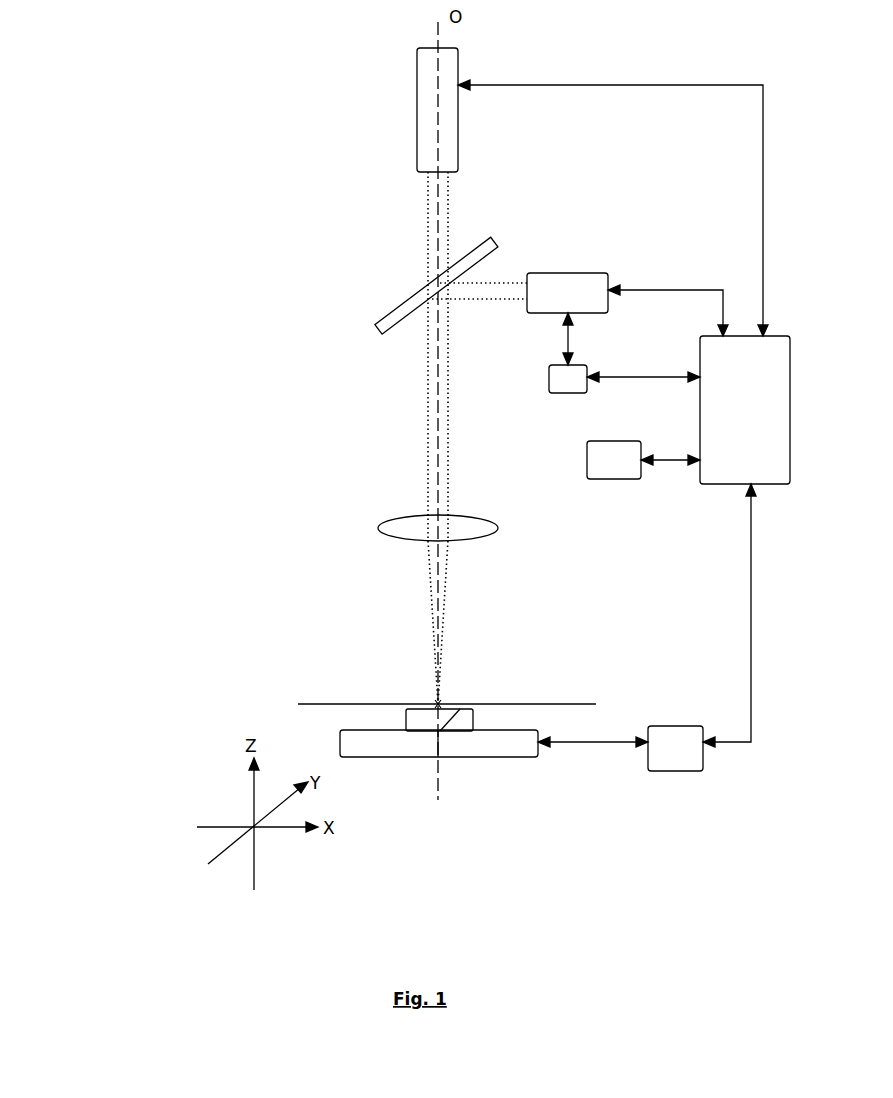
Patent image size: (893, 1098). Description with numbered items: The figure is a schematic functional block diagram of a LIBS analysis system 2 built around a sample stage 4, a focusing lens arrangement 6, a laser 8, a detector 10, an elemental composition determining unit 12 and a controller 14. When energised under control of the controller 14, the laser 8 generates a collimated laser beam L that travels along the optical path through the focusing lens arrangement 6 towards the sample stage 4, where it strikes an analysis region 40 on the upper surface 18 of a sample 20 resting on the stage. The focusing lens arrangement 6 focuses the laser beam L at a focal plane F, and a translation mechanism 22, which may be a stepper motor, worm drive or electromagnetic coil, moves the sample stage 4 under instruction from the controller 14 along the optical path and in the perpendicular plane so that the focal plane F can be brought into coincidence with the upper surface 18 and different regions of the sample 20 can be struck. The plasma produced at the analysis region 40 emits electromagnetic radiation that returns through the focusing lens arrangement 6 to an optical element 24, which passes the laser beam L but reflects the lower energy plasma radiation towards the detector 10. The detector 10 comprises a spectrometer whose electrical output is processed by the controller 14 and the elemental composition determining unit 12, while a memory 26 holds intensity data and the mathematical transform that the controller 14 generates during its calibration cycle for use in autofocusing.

The LIBS analysis system 2 is at (158, 572).
The sample stage 4 is at (527, 757).
The focusing lens arrangement 6 is at (385, 525).
The laser 8 is at (417, 105).
The detector 10 is at (552, 273).
The elemental composition determining unit 12 is at (549, 382).
The controller 14 is at (745, 410).
The upper surface 18 is at (417, 710).
The sample 20 is at (472, 720).
The translation mechanism 22 is at (680, 771).
The optical element 24 is at (391, 308).
The memory 26 is at (613, 479).
The analysis region 40 is at (438, 733).
The laser beam L is at (449, 183).
The focal plane F is at (515, 704).